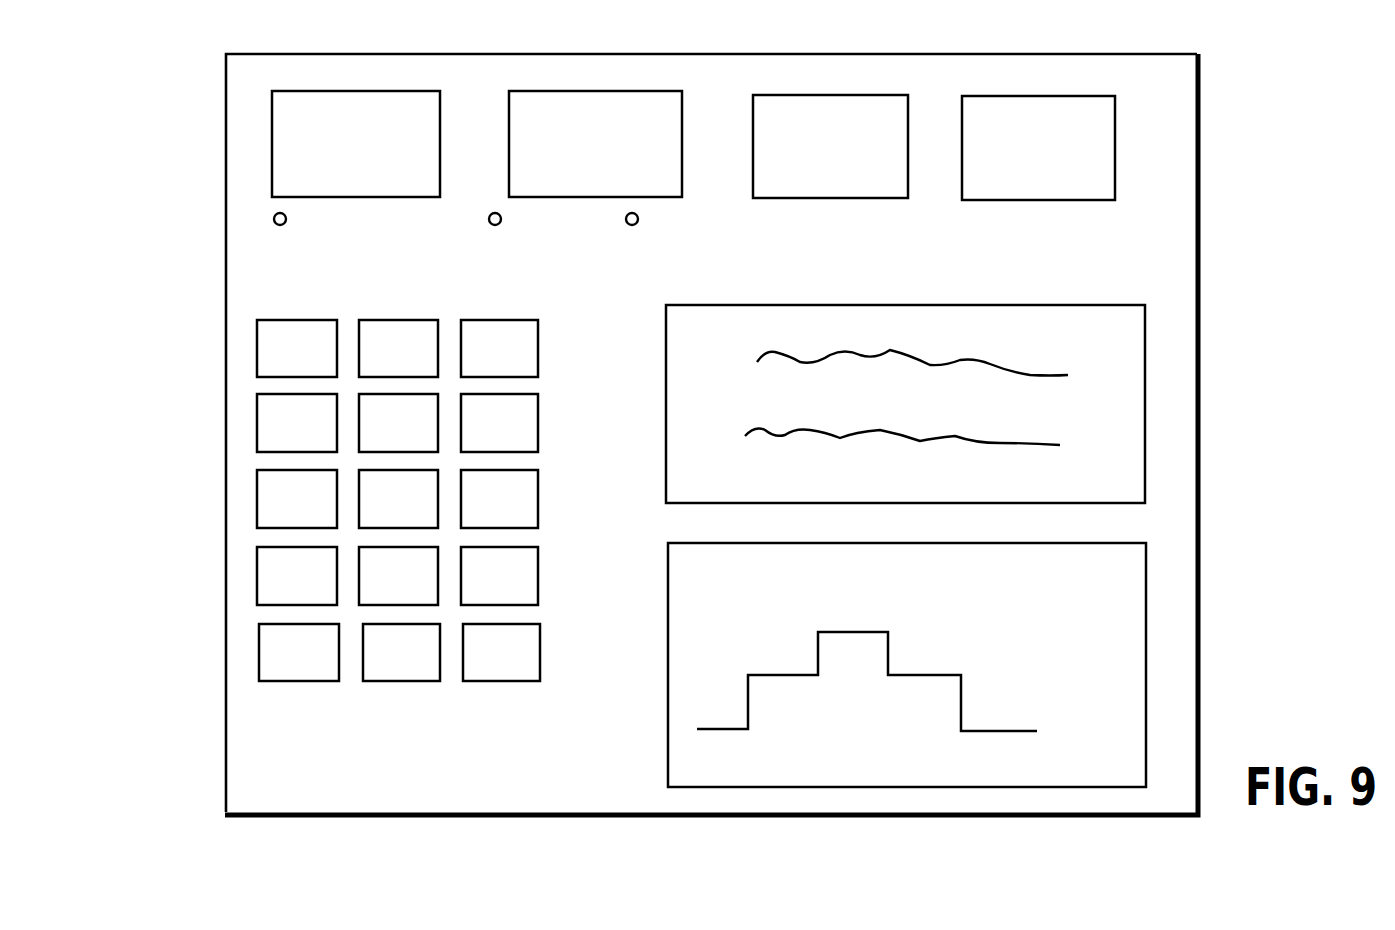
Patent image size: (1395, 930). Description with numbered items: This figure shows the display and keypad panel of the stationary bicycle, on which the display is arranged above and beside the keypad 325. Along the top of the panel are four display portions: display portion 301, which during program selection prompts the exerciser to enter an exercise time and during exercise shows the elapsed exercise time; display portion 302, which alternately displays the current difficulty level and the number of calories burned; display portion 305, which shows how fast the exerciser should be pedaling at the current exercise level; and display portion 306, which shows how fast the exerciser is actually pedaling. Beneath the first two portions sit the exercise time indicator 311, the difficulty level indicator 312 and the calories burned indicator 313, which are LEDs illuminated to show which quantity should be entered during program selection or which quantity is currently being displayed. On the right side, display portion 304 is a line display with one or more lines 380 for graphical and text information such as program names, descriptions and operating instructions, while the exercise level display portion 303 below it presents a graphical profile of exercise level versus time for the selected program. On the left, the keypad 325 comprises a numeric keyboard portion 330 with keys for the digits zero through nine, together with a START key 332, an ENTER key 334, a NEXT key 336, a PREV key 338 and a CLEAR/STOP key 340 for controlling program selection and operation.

The display portion 301 is at (413, 88).
The display portion 302 is at (568, 90).
The exercise level display portion 303 is at (668, 740).
The display portion 304 is at (860, 404).
The display portion 305 is at (811, 93).
The display portion 306 is at (1007, 97).
The exercise time indicator 311 is at (268, 218).
The difficulty level indicator 312 is at (495, 226).
The calories burned indicator 313 is at (634, 227).
The keypad 325 is at (369, 553).
The numeric keyboard portion 330 is at (510, 384).
The START key 332 is at (318, 683).
The ENTER key 334 is at (400, 683).
The NEXT key 336 is at (540, 577).
The PREV key 338 is at (257, 573).
The CLEAR/STOP key 340 is at (497, 683).
The lines 380 is at (763, 425).